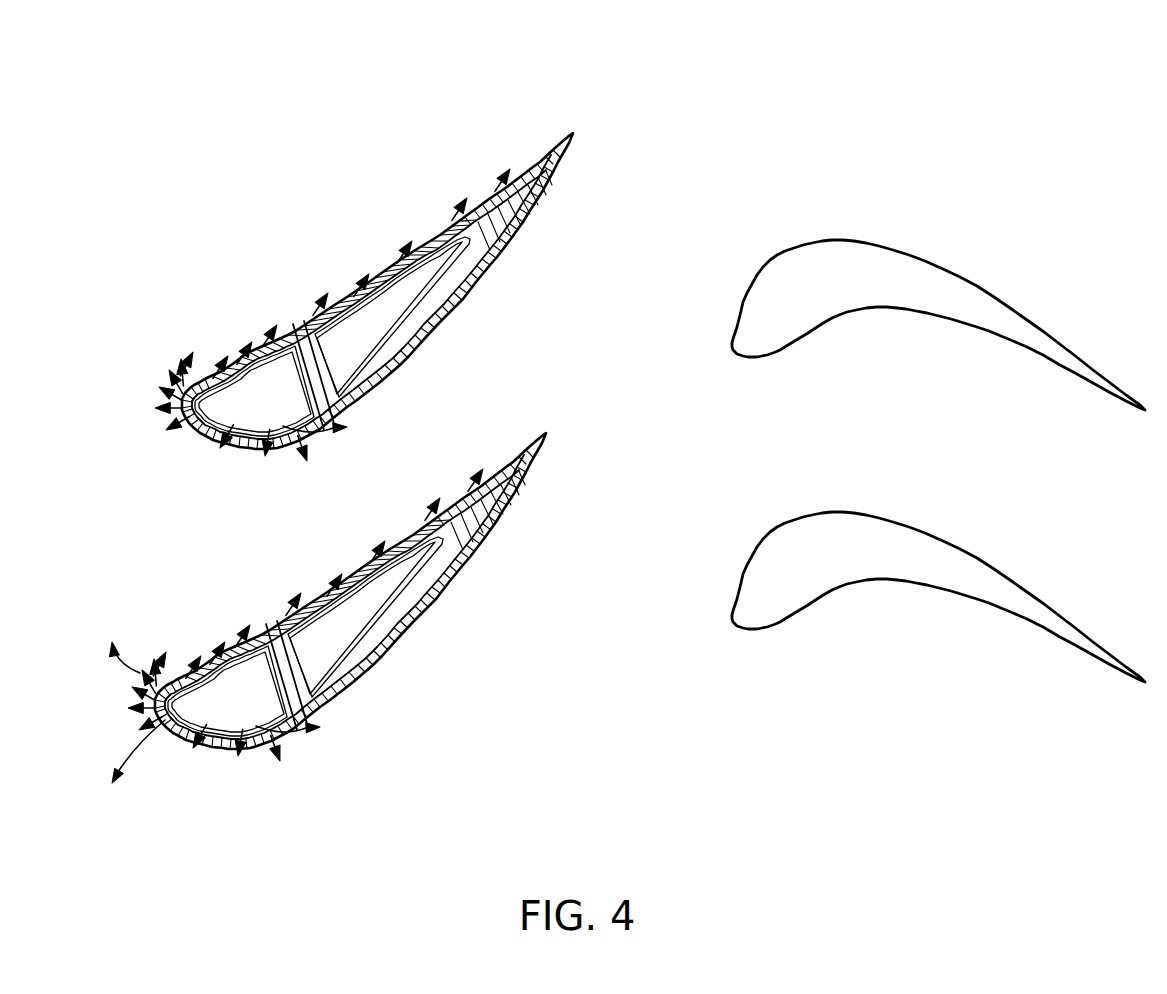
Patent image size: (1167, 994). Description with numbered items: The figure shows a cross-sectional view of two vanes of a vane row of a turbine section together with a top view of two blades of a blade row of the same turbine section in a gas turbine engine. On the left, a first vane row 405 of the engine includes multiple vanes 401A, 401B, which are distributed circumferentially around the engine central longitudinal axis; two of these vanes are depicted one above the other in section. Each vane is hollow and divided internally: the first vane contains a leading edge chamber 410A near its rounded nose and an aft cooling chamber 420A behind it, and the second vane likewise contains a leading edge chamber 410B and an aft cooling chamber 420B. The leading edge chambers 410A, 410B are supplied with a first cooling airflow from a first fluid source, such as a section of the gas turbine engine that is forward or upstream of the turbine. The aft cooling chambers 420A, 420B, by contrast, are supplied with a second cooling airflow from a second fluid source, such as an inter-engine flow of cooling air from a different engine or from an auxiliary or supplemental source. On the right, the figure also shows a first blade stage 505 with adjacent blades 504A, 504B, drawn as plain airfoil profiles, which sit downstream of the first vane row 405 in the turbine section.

The first vane row 405 is at (394, 72).
The vane 401A is at (224, 226).
The vane 401B is at (166, 558).
The leading edge chamber 410A is at (290, 412).
The aft cooling chamber 420A is at (389, 341).
The leading edge chamber 410B is at (262, 717).
The aft cooling chamber 420B is at (357, 646).
The first blade stage 505 is at (862, 72).
The blade 504A is at (777, 272).
The blade 504B is at (788, 553).